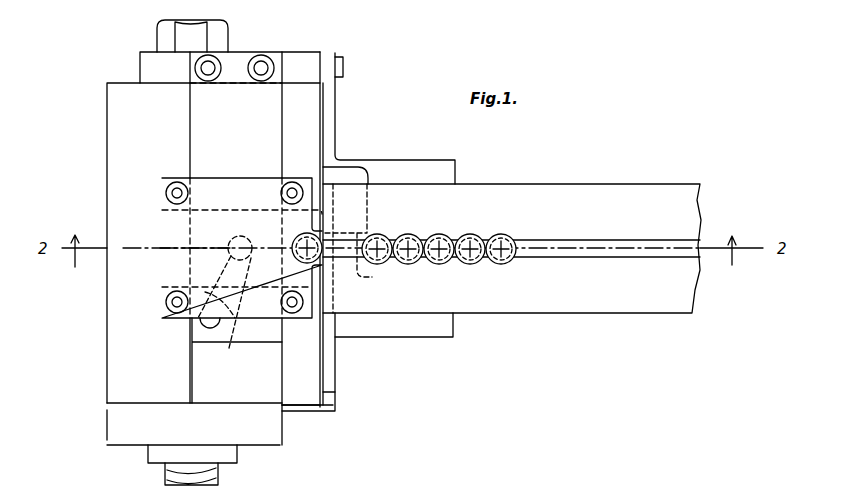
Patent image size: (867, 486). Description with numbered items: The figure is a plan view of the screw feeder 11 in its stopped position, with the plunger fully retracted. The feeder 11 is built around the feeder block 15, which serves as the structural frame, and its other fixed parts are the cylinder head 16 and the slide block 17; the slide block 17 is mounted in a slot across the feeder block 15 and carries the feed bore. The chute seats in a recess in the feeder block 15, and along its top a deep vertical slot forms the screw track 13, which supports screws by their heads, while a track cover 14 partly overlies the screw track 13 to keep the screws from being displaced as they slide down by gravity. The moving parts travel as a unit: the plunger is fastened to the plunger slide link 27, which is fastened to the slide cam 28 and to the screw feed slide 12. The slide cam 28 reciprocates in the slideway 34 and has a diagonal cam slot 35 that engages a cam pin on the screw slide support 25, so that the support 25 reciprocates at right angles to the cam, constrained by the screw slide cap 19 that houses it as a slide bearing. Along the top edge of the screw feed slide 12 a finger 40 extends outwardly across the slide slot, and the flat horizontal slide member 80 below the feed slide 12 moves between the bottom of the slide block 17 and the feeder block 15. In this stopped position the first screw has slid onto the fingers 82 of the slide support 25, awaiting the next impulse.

The screw feeder 11 is at (388, 153).
The screw feed slide 12 is at (330, 131).
The screw track 13 is at (668, 257).
The track cover 14 is at (660, 203).
The feeder block 15 is at (453, 330).
The cylinder head 16 is at (107, 425).
The slide block 17 is at (308, 392).
The screw slide cap 19 is at (198, 186).
The screw slide support 25 is at (198, 257).
The plunger slide link 27 is at (150, 65).
The slide cam 28 is at (203, 108).
The slideway 34 is at (263, 398).
The cam slot 35 is at (237, 323).
The finger 40 is at (372, 277).
The slide member 80 is at (310, 411).
The fingers 82 is at (318, 232).